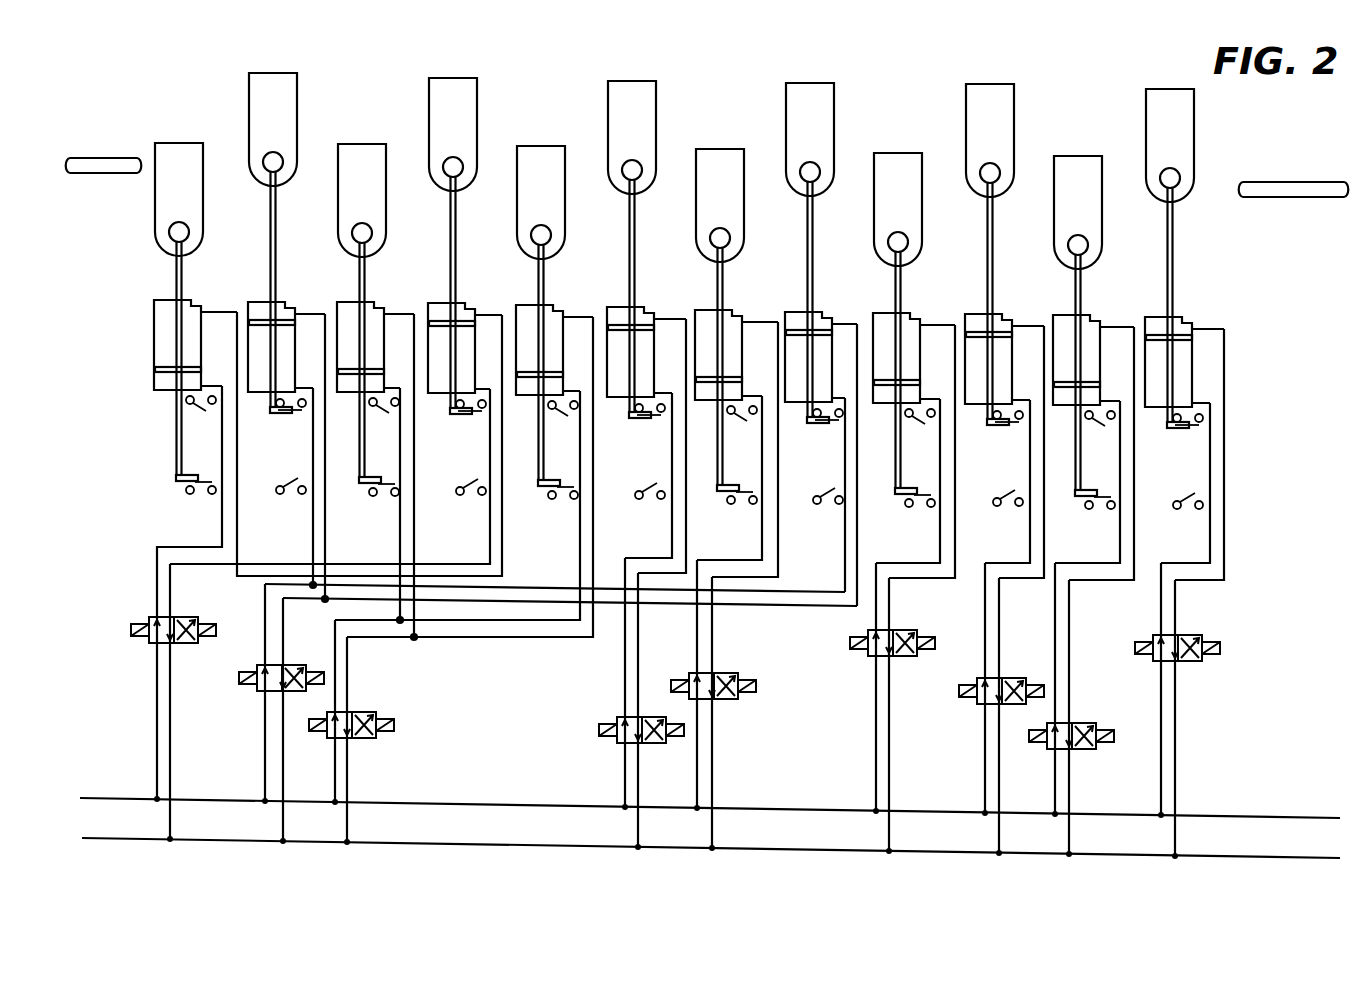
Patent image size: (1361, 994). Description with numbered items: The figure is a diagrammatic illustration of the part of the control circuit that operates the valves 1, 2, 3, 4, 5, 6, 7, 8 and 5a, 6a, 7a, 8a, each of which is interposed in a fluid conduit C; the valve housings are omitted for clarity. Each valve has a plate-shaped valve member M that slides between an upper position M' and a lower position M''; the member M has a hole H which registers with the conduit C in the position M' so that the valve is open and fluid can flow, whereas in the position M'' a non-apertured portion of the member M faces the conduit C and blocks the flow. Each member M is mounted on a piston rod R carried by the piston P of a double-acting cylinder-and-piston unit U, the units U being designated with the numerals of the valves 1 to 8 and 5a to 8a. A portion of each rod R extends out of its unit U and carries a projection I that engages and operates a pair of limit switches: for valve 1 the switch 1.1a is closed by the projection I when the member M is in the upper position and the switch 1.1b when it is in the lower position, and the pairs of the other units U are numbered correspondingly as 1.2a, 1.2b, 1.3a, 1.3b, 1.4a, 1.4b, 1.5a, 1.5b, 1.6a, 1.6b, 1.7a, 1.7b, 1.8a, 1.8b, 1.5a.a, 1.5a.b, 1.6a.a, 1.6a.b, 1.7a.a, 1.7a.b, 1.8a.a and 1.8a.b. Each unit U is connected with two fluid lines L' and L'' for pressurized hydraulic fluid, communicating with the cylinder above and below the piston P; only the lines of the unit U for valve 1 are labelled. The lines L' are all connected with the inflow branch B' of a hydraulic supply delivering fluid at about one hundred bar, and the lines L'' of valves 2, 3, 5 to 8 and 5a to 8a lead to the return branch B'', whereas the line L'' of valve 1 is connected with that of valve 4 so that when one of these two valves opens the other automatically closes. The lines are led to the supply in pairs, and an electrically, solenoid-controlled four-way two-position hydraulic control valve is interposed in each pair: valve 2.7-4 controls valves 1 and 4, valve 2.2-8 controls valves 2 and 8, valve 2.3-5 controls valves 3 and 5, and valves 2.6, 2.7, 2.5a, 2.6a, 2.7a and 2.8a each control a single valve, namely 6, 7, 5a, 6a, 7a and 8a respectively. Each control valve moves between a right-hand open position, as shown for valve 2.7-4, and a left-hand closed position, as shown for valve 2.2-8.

The fluid conduit C is at (97, 157).
The hole H is at (169, 232).
The valve member M is at (288, 129).
The first (upper) position of valve member M' is at (477, 131).
The second (lower) position of valve member M'' is at (548, 183).
The piston rod R is at (445, 271).
The projection I is at (178, 492).
The double-acting cylinder-and-piston unit U is at (157, 311).
The piston P is at (157, 368).
The fluid line L' is at (173, 572).
The fluid line L'' is at (336, 550).
The inflow branch B' is at (710, 793).
The return branch B'' is at (711, 865).
The valve 1 is at (187, 305).
The valve 2 is at (285, 306).
The valve 3 is at (381, 306).
The valve 4 is at (466, 307).
The valve 5 is at (554, 309).
The valve 6 is at (643, 311).
The valve 7 is at (733, 312).
The valve 8 is at (824, 314).
The valve 5a is at (908, 315).
The valve 6a is at (999, 316).
The valve 7a is at (1094, 318).
The valve 8a is at (1184, 318).
The limit switch 1.1a is at (199, 412).
The limit switch 1.1b is at (192, 501).
The limit switch 1.2a is at (283, 418).
The limit switch 1.2b is at (280, 497).
The limit switch 1.3a is at (382, 414).
The limit switch 1.3b is at (375, 503).
The limit switch 1.4a is at (463, 419).
The limit switch 1.4b is at (460, 498).
The limit switch 1.5a is at (561, 417).
The limit switch 1.5b is at (554, 506).
The limit switch 1.6a is at (642, 423).
The limit switch 1.6b is at (639, 502).
The limit switch 1.7a is at (740, 422).
The limit switch 1.7b is at (733, 511).
The limit switch 1.8a is at (820, 428).
The limit switch 1.8b is at (817, 507).
The limit switch 1.5a.a is at (918, 425).
The limit switch 1.5a.b is at (907, 514).
The limit switch 1.6a.a is at (998, 430).
The limit switch 1.6a.b is at (995, 509).
The limit switch 1.7a.a is at (1098, 427).
The limit switch 1.7a.b is at (1087, 516).
The limit switch 1.8a.a is at (1178, 433).
The limit switch 1.8a.b is at (1175, 512).
The four-way two-position hydraulic control valve 2.7-4 is at (181, 618).
The four-way two-position hydraulic control valve 2.2-8 is at (287, 667).
The four-way two-position hydraulic control valve 2.3-5 is at (353, 712).
The four-way two-position hydraulic control valve 2.6 is at (613, 717).
The four-way two-position hydraulic control valve 2.7 is at (721, 673).
The four-way two-position hydraulic control valve 2.5a is at (906, 630).
The four-way two-position hydraulic control valve 2.6a is at (1001, 679).
The four-way two-position hydraulic control valve 2.7a is at (1079, 724).
The four-way two-position hydraulic control valve 2.8a is at (1191, 636).